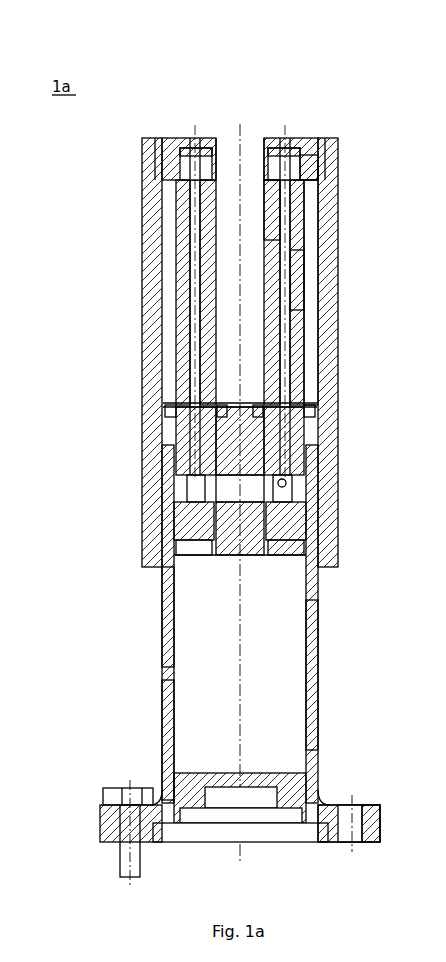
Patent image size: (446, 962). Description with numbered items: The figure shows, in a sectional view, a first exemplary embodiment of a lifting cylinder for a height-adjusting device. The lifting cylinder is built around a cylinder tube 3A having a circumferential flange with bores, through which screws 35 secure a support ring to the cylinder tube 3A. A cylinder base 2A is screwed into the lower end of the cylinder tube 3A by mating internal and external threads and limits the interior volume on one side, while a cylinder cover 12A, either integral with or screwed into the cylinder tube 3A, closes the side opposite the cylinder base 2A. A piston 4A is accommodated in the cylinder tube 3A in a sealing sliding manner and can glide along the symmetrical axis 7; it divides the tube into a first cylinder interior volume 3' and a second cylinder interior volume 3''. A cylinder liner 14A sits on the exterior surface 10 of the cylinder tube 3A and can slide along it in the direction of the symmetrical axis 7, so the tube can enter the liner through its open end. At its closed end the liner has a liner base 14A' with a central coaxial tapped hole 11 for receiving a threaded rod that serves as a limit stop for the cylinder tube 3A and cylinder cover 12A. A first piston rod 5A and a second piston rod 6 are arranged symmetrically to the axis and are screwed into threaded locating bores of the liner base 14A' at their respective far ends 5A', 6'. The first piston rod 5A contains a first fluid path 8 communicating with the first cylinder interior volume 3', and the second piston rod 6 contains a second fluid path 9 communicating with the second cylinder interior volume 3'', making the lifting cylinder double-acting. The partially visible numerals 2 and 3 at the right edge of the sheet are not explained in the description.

The base 2 is at (382, 799).
The cylinder base 2A is at (163, 782).
The housing flange 3 is at (404, 829).
The cylinder tube 3A is at (165, 698).
The first cylinder interior volume 3' is at (200, 624).
The second cylinder interior volume 3'' is at (196, 352).
The piston 4A is at (237, 530).
The first piston rod 5A is at (187, 292).
The far end of the first piston rod 5A' is at (200, 186).
The second piston rod 6 is at (299, 309).
The far end of the second piston rod 6' is at (332, 214).
The symmetrical axis 7 is at (322, 687).
The first fluid path 8 is at (150, 300).
The second fluid path 9 is at (333, 347).
The exterior surface 10 is at (157, 630).
The tapped hole 11 is at (233, 150).
The cylinder cover 12A is at (142, 465).
The cylinder liner 14A is at (368, 289).
The liner base 14A' is at (340, 108).
The screws 35 is at (117, 857).